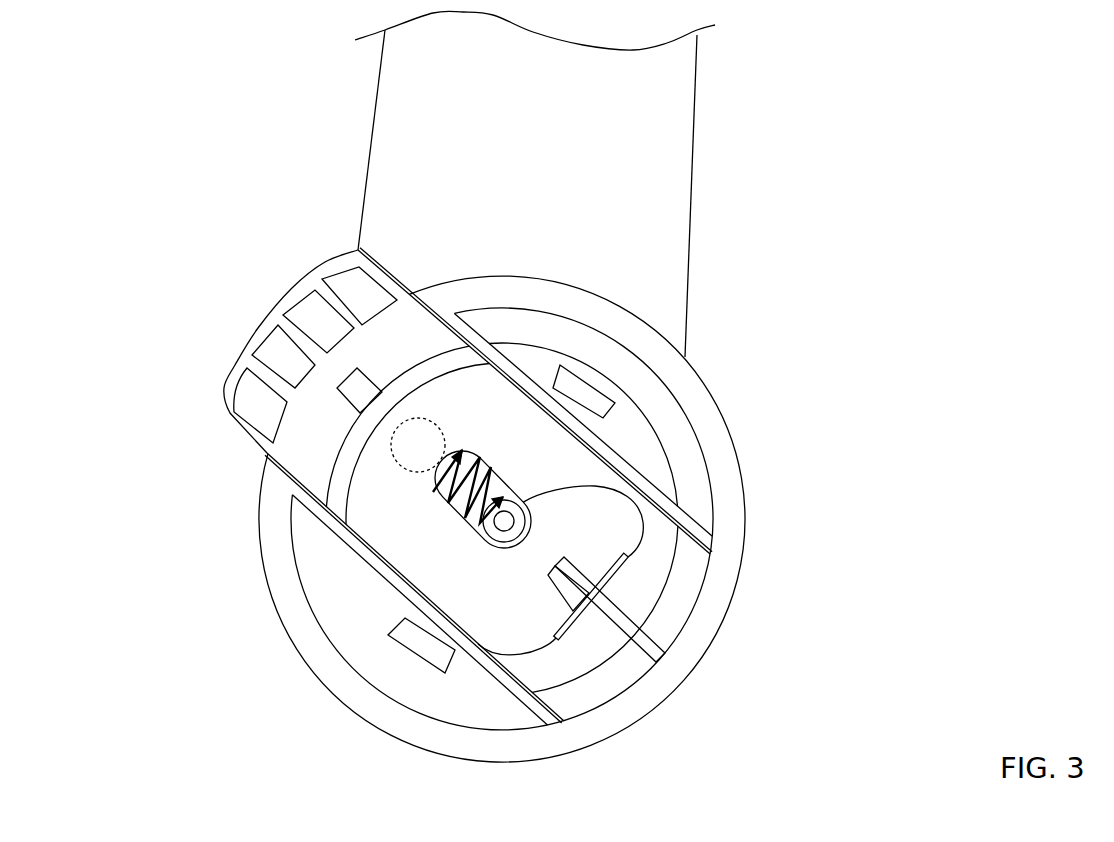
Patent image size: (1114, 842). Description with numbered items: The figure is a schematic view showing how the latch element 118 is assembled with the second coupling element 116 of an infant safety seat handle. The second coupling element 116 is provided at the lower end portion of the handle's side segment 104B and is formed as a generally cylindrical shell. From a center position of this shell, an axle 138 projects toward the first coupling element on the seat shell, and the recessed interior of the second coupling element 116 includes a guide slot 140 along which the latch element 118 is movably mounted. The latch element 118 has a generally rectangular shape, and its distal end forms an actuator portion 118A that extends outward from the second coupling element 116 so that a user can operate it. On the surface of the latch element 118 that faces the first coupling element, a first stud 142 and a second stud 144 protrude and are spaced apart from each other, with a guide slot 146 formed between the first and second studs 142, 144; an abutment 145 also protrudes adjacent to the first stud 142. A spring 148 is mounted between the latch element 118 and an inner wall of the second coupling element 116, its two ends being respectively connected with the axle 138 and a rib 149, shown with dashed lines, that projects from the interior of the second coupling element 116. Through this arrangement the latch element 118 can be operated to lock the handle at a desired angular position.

The side segment 104B is at (385, 132).
The actuator portion 118A is at (293, 293).
The first stud 142 is at (358, 390).
The abutment 145 is at (357, 436).
The latch element 118 is at (313, 445).
The rib 149 is at (402, 468).
The spring 148 is at (482, 513).
The guide slot 146 is at (490, 463).
The second coupling element 116 is at (703, 403).
The guide slot 140 is at (678, 555).
The axle 138 is at (640, 491).
The second stud 144 is at (570, 572).